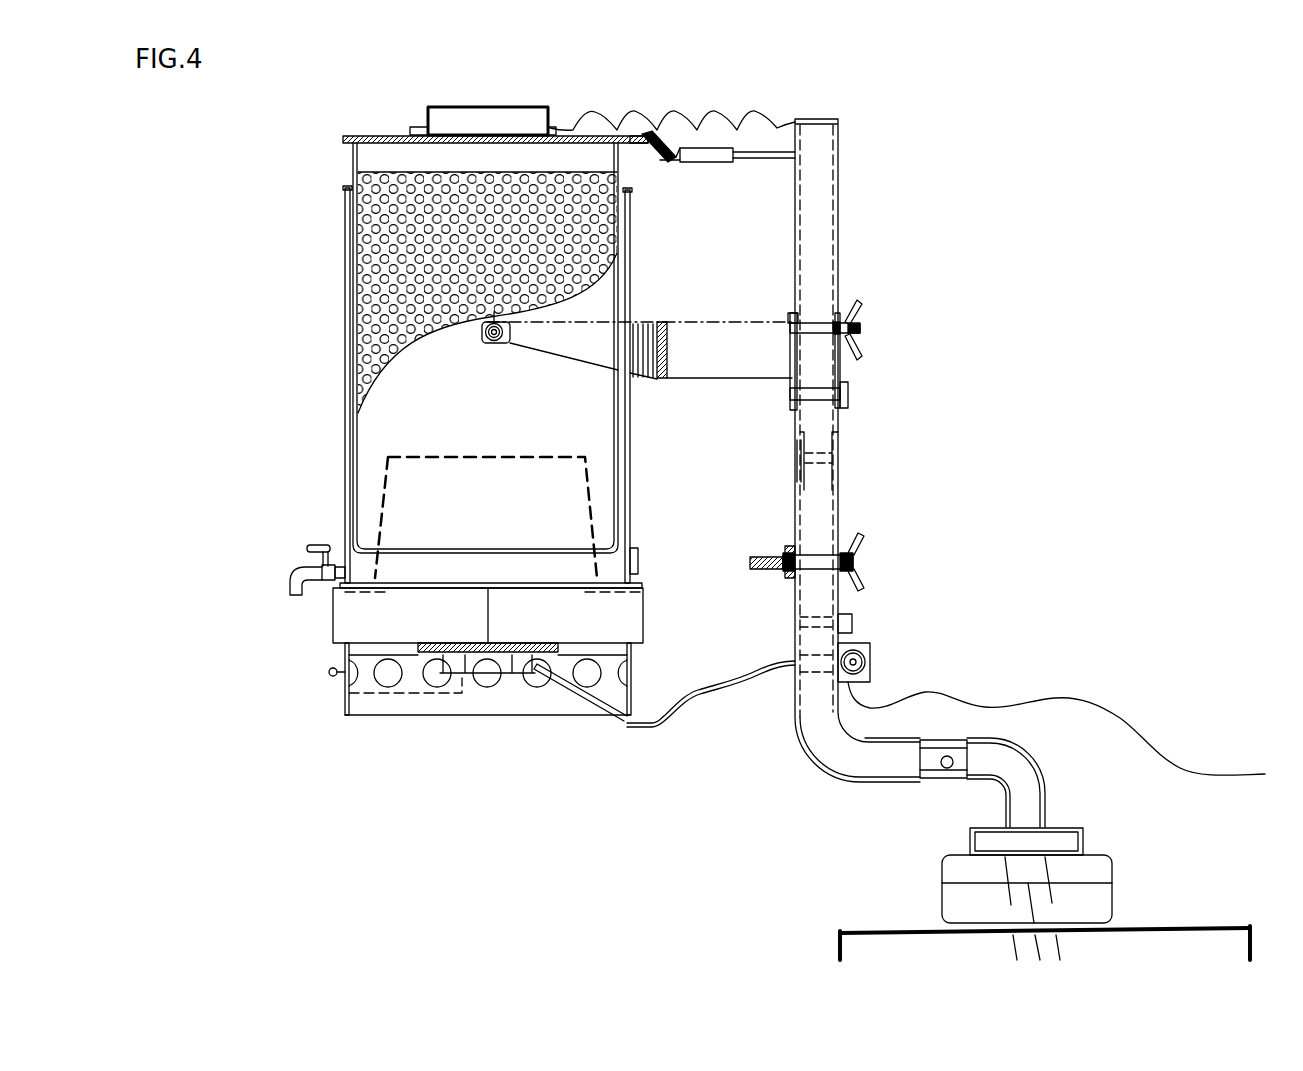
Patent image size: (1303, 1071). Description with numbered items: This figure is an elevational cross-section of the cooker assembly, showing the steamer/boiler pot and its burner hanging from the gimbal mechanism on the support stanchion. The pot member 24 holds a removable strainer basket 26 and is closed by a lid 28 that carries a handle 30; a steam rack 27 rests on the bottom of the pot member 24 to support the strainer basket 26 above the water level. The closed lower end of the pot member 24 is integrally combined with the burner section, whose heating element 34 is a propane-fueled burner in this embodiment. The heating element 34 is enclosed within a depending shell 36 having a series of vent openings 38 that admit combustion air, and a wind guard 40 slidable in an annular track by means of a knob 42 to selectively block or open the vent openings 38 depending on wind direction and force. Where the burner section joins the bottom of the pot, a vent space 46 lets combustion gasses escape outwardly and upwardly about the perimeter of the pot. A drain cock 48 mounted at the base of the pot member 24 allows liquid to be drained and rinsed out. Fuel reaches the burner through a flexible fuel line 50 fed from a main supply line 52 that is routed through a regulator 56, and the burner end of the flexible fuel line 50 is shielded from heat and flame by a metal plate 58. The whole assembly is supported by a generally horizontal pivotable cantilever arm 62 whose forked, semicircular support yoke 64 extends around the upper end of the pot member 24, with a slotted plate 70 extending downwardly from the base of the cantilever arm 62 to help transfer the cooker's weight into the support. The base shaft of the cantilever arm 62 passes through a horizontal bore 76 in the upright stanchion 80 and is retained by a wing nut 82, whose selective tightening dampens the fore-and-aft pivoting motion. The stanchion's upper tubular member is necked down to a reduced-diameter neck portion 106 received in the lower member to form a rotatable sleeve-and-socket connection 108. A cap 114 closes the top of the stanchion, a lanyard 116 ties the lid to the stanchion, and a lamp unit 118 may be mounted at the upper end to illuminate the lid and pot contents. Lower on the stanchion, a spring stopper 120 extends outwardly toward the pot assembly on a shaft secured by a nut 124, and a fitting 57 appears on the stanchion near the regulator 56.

The pot member 24 is at (353, 372).
The strainer basket 26 is at (355, 242).
The steam rack 27 is at (386, 478).
The lid 28 is at (353, 146).
The handle 30 is at (445, 106).
The heating element 34 is at (480, 662).
The depending shell 36 is at (345, 708).
The vent openings 38 is at (386, 682).
The wind guard 40 is at (345, 684).
The knob 42 is at (329, 672).
The vent space 46 is at (348, 592).
The drain cock 48 is at (308, 545).
The flexible fuel line 50 is at (688, 700).
The main supply line 52 is at (1135, 714).
The regulator 56 is at (872, 666).
The connector 57 is at (853, 617).
The metal plate 58 is at (592, 690).
The cantilever arm 62 is at (712, 352).
The support yoke 64 is at (668, 334).
The slotted plate 70 is at (790, 384).
The horizontal bore 76 is at (820, 326).
The upright stanchion 80 is at (820, 226).
The wing nut 82 is at (795, 410).
The neck portion 106 is at (798, 479).
The sleeve-and-socket connection 108 is at (840, 442).
The cap 114 is at (838, 121).
The cable 116 is at (596, 112).
The lamp unit 118 is at (716, 147).
The spring stopper 120 is at (750, 564).
The nut 124 is at (860, 538).